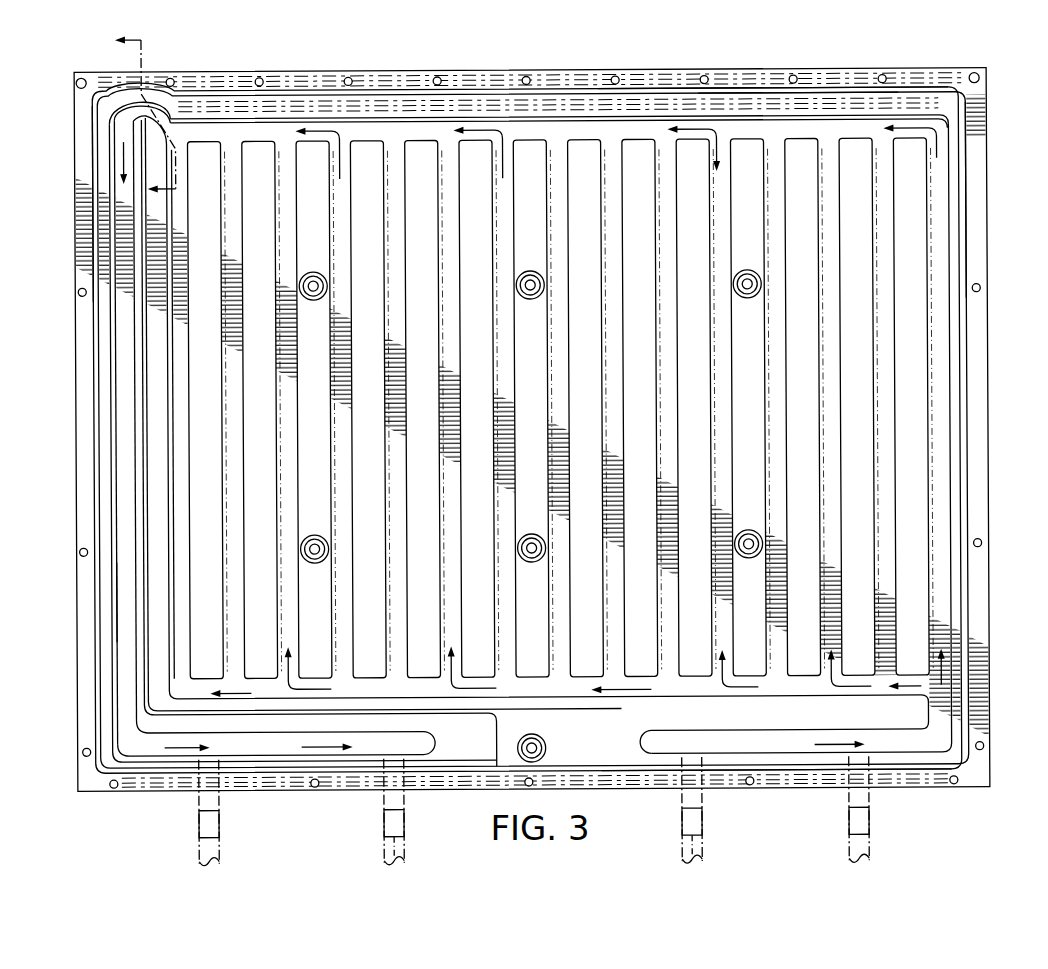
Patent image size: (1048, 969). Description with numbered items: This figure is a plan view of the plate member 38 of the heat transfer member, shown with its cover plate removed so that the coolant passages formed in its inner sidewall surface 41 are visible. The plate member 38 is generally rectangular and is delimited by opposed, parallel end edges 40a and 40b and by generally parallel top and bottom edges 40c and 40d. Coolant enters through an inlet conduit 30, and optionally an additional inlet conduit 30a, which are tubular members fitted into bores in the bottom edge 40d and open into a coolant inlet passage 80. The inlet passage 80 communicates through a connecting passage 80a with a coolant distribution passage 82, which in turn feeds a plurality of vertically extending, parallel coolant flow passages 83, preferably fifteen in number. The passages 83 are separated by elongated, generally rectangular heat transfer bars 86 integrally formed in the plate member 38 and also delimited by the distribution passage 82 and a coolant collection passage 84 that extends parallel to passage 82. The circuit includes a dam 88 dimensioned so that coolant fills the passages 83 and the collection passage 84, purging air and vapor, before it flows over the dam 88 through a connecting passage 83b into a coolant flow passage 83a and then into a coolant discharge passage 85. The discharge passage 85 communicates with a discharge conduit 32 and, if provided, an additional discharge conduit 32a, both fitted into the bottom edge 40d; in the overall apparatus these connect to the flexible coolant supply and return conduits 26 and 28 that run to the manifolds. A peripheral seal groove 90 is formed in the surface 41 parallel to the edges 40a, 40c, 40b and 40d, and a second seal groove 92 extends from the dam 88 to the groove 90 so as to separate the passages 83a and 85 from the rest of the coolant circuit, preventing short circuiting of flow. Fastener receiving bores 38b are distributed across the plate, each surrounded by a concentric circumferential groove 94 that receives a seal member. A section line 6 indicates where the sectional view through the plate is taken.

The section line 6- 6 is at (140, 114).
The flexible coolant supply conduit 26 is at (700, 855).
The flexible coolant return conduit 28 is at (382, 852).
The coolant inlet conduit 30 is at (702, 800).
The additional inlet conduit 30a is at (865, 800).
The coolant discharge conduit 32 is at (384, 805).
The additional discharge conduit 32a is at (200, 800).
The plate member 38 is at (990, 224).
The fastener receiving bore 38b is at (323, 275).
The end edge 40a is at (976, 128).
The end edge 40b is at (75, 152).
The top edge 40c is at (912, 72).
The bottom edge 40d is at (930, 790).
The inner sidewall surface 41 is at (980, 187).
The coolant inlet passage 80 is at (728, 745).
The connecting passage 80a is at (940, 710).
The coolant distribution passage 82 is at (797, 690).
The coolant flow passage 83 is at (232, 172).
The coolant flow passage 83a is at (130, 598).
The connecting passage 83b is at (140, 113).
The coolant collection passage 84 is at (470, 135).
The coolant discharge passage 85 is at (265, 748).
The heat transfer bar 86 is at (232, 165).
The dam 88 is at (140, 116).
The peripheral seal groove 90 is at (798, 88).
The second seal groove 92 is at (135, 380).
The concentric circumferential groove 94 is at (317, 299).